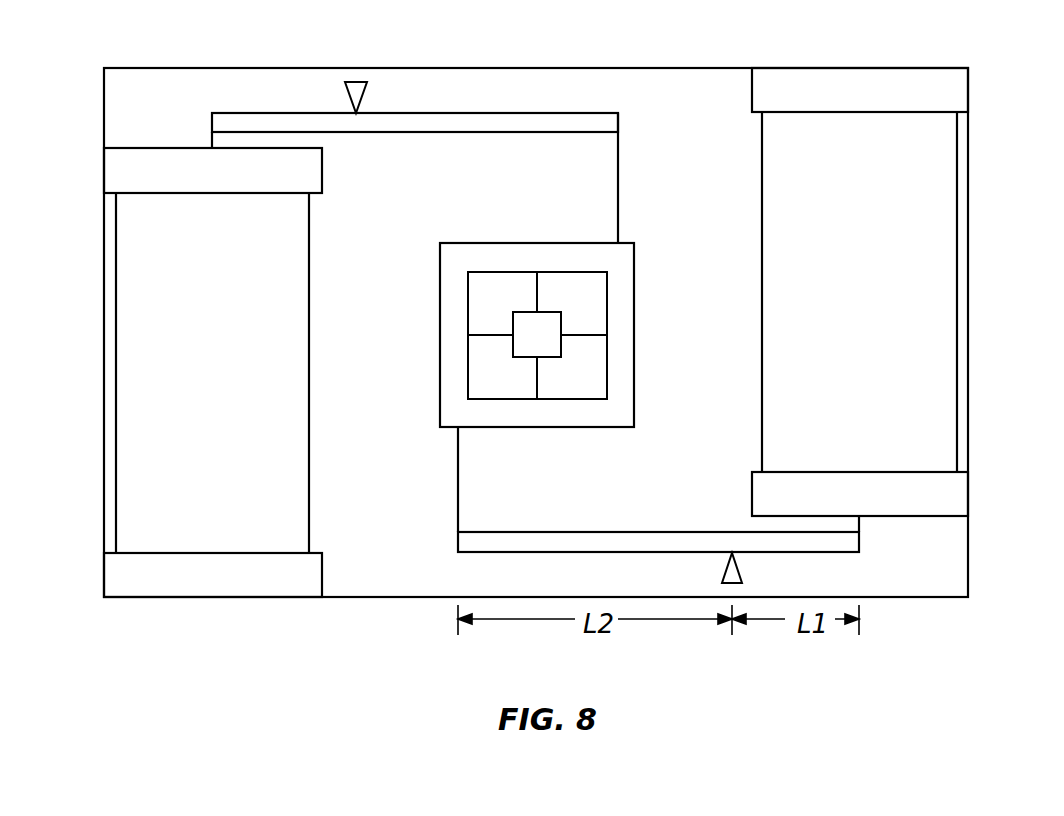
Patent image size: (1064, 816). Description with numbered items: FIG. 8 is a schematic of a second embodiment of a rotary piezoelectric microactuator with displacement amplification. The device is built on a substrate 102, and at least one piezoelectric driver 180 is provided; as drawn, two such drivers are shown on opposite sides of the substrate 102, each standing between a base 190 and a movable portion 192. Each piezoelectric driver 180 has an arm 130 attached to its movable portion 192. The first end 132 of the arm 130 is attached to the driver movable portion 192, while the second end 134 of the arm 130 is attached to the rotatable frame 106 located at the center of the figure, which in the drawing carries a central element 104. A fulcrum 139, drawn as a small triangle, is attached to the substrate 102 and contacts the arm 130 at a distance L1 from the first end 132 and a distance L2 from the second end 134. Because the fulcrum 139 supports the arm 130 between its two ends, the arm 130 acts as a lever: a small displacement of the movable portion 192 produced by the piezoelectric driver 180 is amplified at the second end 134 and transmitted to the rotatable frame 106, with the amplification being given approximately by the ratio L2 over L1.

The substrate 102 is at (138, 74).
The sensor die 104 is at (555, 325).
The rotatable frame 106 is at (478, 252).
The arm 130 is at (553, 118).
The first end 132 is at (212, 118).
The second end 134 is at (618, 120).
The fulcrum 139 is at (345, 92).
The piezoelectric driver 180 is at (122, 467).
The base 190 is at (122, 580).
The movable portion 192 is at (120, 175).